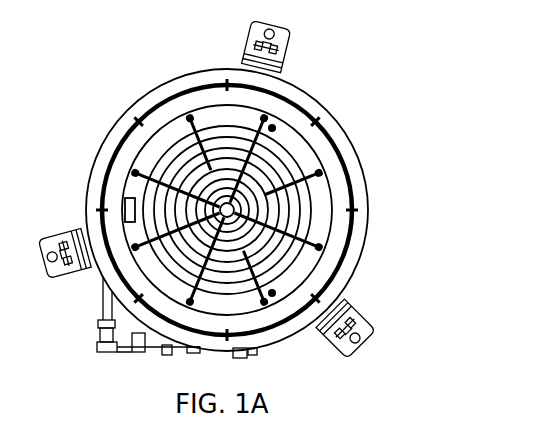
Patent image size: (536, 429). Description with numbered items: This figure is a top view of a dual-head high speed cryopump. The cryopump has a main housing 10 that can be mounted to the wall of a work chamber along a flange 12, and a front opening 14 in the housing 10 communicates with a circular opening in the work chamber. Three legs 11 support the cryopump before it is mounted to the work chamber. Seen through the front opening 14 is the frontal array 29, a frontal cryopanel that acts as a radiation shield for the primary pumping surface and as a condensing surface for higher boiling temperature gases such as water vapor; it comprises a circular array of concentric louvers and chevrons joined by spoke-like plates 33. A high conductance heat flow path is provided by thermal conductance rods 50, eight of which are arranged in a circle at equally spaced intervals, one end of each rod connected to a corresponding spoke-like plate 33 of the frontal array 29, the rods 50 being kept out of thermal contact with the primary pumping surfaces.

The main housing 10 is at (362, 253).
The legs 11 is at (372, 347).
The flange 12 is at (368, 208).
The front opening 14 is at (340, 141).
The frontal array 29 is at (141, 148).
The spoke-like plates 33 is at (253, 160).
The thermal conductance rods 50 is at (262, 116).